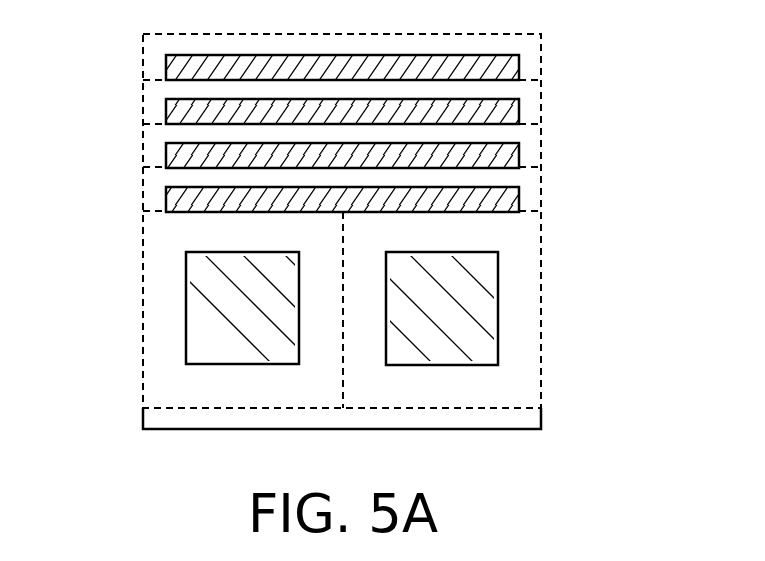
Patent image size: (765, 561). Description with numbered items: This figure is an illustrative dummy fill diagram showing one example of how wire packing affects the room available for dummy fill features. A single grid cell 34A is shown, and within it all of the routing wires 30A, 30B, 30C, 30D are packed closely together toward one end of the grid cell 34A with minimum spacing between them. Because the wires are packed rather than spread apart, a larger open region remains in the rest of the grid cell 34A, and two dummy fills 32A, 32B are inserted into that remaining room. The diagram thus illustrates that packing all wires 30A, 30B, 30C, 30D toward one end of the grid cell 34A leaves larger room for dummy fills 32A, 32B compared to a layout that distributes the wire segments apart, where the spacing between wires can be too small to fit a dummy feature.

The routing wire 30A is at (514, 64).
The routing wire 30B is at (512, 109).
The routing wire 30C is at (512, 153).
The routing wire 30D is at (512, 197).
The dummy fill 32A is at (200, 307).
The dummy fill 32B is at (485, 306).
The grid cell 34A is at (143, 210).